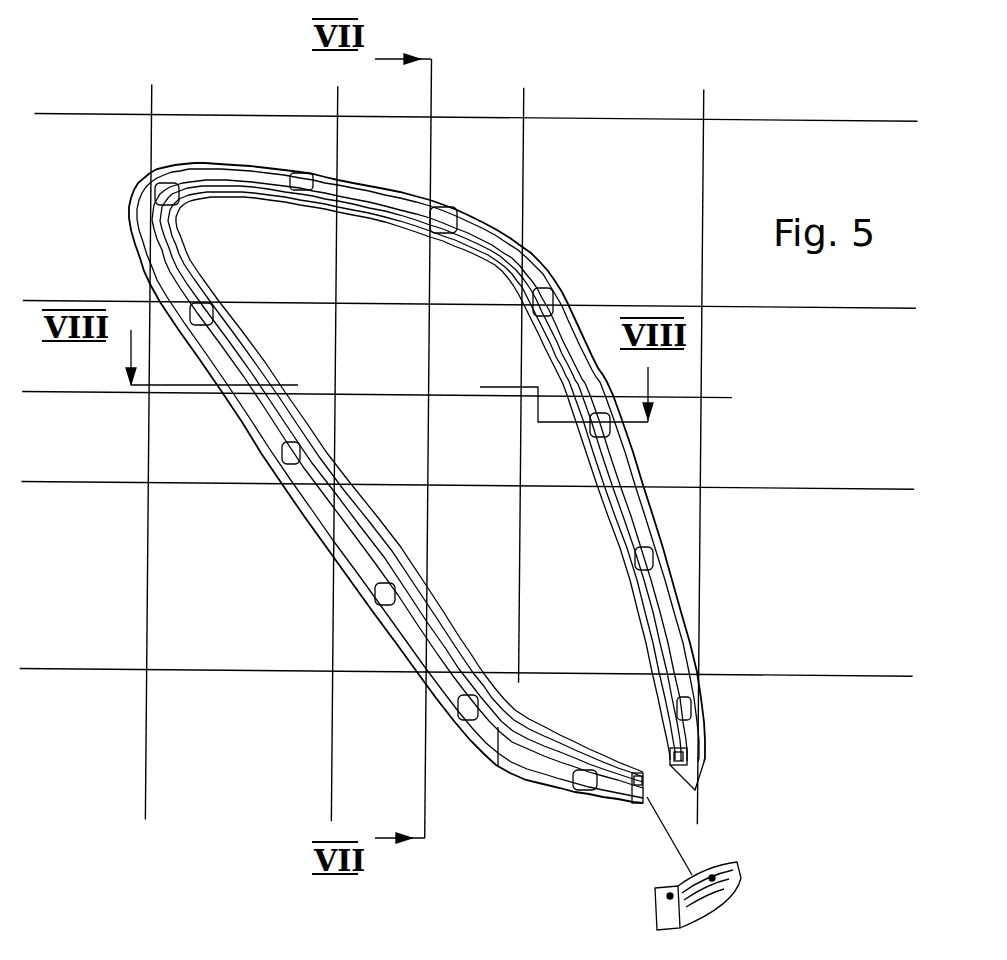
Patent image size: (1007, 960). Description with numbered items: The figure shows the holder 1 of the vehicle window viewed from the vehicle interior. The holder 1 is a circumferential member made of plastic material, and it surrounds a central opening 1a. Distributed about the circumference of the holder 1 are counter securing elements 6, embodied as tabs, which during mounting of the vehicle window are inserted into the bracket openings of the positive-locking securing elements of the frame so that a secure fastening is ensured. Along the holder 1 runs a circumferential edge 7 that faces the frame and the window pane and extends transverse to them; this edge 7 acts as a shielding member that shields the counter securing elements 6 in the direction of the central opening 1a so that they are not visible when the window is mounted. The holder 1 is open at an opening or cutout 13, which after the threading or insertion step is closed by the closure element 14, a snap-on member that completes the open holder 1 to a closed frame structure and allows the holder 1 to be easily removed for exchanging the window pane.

The holder 1 is at (656, 462).
The central opening 1a is at (410, 366).
The counter securing elements 6 is at (310, 178).
The circumferential edge 7 is at (607, 503).
The opening 13 is at (672, 797).
The closure element 14 is at (665, 900).